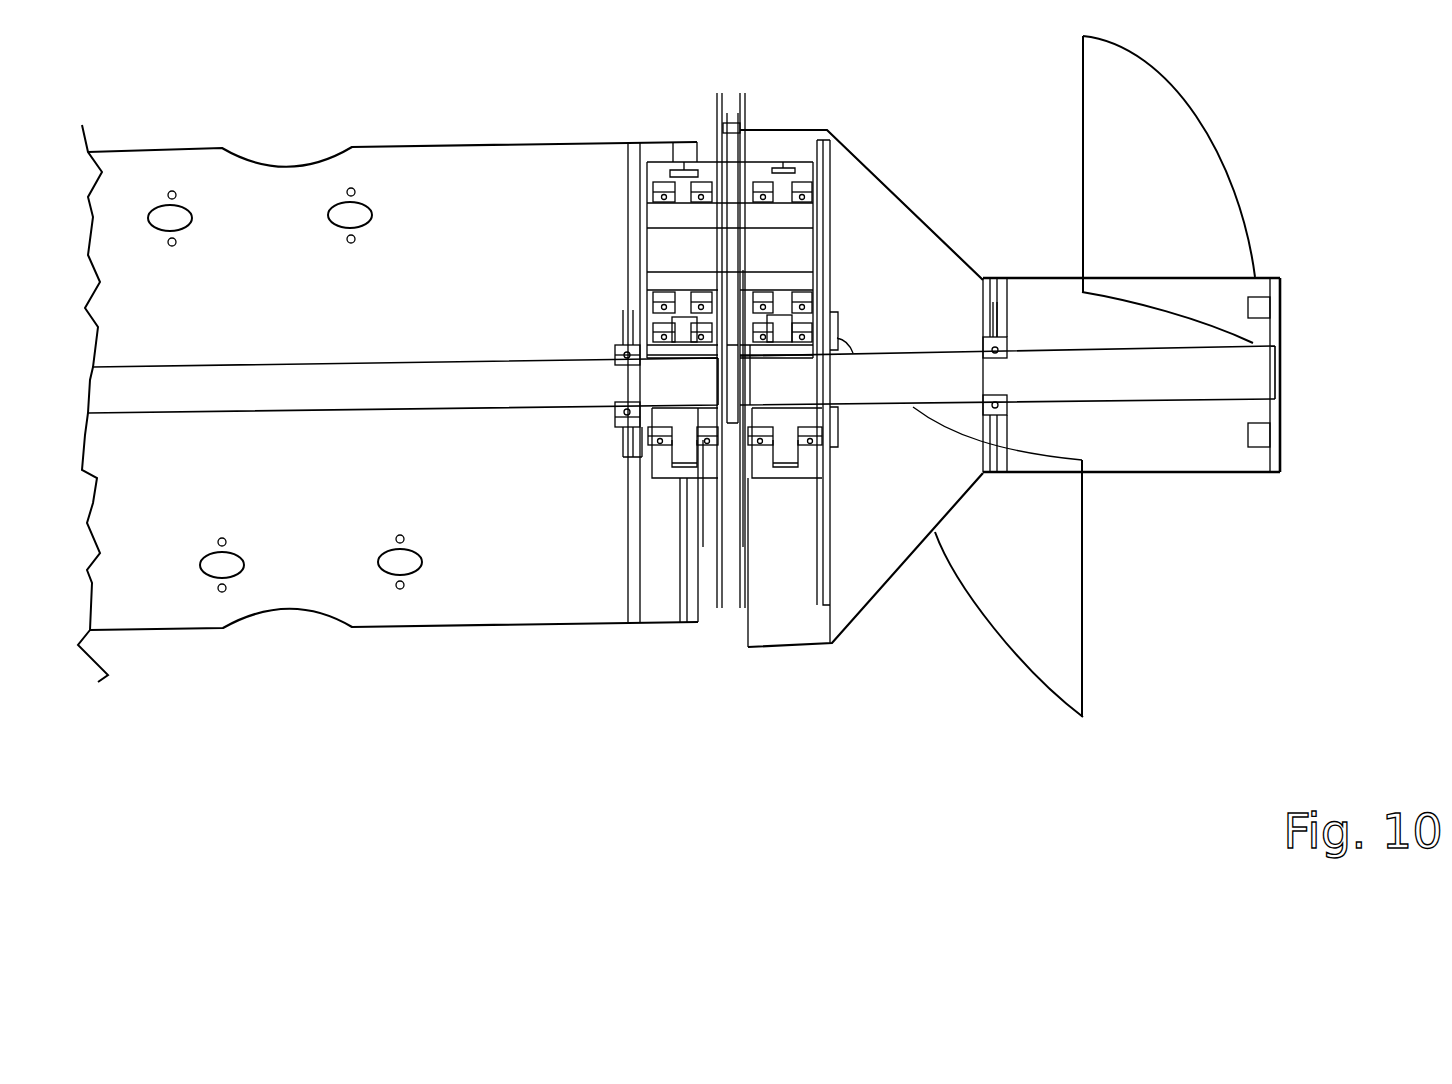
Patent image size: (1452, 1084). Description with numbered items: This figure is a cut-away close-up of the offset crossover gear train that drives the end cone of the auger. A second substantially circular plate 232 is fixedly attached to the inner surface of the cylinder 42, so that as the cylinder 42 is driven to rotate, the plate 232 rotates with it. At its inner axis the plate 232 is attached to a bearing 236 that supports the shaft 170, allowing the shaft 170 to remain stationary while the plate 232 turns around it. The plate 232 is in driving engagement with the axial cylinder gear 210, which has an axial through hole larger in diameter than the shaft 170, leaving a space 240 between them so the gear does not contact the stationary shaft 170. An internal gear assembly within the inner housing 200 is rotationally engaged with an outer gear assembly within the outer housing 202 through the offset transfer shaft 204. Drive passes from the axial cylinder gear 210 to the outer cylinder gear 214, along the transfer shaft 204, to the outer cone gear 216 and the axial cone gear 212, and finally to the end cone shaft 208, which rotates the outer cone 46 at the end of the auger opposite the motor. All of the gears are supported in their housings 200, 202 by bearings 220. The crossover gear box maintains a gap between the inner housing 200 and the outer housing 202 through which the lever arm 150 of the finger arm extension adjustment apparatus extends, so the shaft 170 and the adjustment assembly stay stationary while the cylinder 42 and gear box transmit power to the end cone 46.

The cylinder 42 is at (192, 147).
The outer cone 46 is at (1123, 520).
The lever arm 150 is at (735, 148).
The shaft 170 is at (403, 385).
The housing 200 is at (703, 470).
The housing 202 is at (813, 463).
The offset transfer shaft 204 is at (708, 262).
The end cone shaft 208 is at (1117, 389).
The axial cylinder gear 210 is at (683, 452).
The axial cone gear 212 is at (775, 330).
The outer cylinder gear 214 is at (667, 217).
The outer cone gear 216 is at (790, 215).
The bearings 220 is at (750, 445).
The second substantially circular plate 232 is at (627, 255).
The bearing 236 is at (622, 428).
The space 240 is at (642, 456).